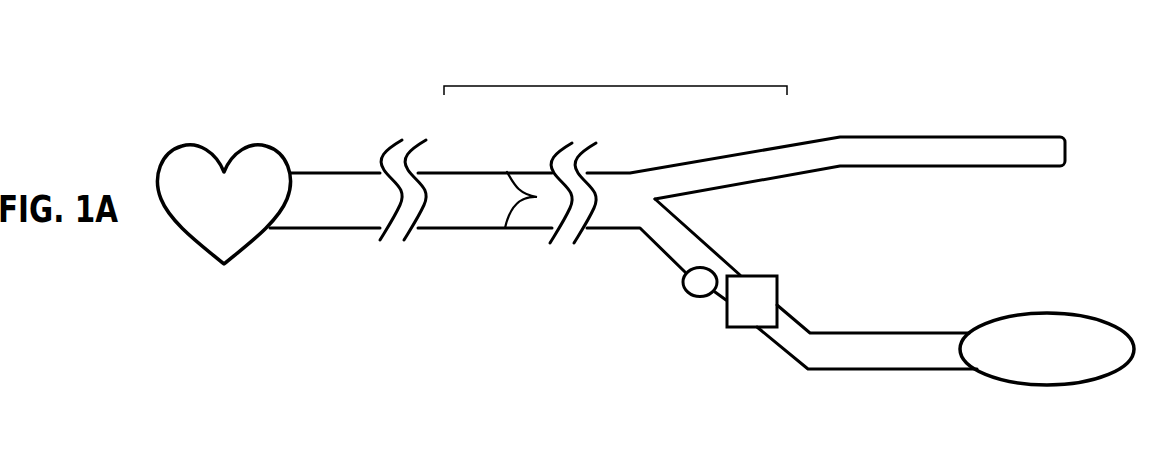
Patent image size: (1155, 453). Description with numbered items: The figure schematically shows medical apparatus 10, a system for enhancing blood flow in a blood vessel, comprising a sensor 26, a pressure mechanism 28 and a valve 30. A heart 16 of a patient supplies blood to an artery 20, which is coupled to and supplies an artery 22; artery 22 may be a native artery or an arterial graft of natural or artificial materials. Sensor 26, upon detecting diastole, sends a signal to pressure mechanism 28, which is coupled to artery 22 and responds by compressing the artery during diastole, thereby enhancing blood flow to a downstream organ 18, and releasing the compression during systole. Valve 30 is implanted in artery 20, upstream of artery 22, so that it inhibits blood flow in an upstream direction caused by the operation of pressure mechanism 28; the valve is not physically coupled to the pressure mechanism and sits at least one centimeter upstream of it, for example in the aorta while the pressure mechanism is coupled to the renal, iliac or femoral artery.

The medical apparatus 10 is at (616, 84).
The heart 16 is at (192, 240).
The downstream organ 18 is at (1012, 387).
The artery 20 is at (343, 172).
The artery 22 is at (667, 253).
The sensor 26 is at (698, 296).
The pressure mechanism 28 is at (798, 290).
The valve 30 is at (507, 172).